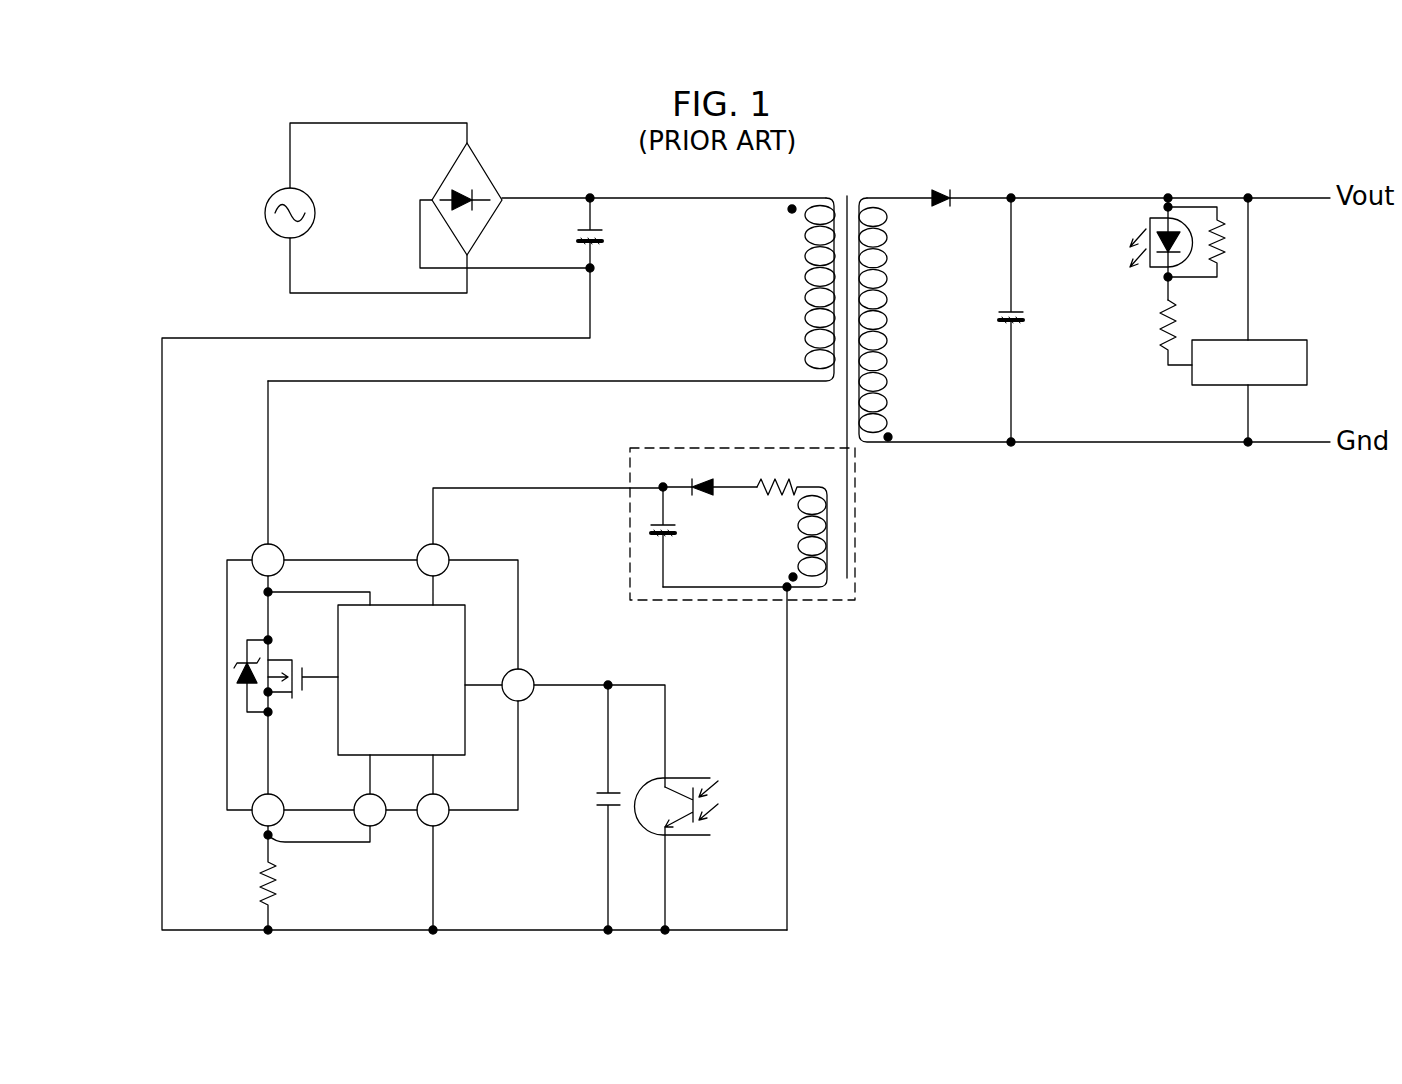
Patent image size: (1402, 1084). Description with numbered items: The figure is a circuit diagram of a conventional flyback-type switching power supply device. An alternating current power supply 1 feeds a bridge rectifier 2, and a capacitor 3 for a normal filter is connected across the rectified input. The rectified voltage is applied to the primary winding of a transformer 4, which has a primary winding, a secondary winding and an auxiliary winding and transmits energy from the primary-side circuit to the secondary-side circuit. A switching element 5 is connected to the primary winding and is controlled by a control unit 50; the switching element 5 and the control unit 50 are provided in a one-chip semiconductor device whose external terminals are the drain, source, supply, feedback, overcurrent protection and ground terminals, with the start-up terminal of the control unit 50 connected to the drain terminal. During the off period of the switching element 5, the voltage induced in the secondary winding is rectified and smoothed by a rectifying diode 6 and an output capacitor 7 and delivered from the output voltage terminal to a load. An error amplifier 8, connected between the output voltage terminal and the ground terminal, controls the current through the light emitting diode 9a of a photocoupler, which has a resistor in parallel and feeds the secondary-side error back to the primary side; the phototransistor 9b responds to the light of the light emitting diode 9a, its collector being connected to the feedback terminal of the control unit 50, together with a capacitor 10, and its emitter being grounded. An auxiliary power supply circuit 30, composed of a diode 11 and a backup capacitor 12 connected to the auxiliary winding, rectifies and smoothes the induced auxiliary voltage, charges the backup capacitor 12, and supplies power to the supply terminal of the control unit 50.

The alternating current power supply 1 is at (264, 212).
The bridge rectifier 2 is at (488, 171).
The capacitor for a normal filter 3 is at (604, 236).
The transformer 4 is at (846, 192).
The switching element 5 is at (240, 660).
The rectifying diode 6 is at (945, 192).
The output capacitor 7 is at (1025, 315).
The error amplifier 8 is at (1285, 339).
The light emitting diode of a photocoupler 9a is at (1152, 218).
The phototransistor of a photocoupler 9b is at (705, 778).
The capacitor 10 is at (600, 812).
The diode 11 is at (699, 478).
The backup capacitor 12 is at (678, 531).
The auxiliary power supply circuit 30 is at (827, 602).
The control unit 50 is at (465, 636).